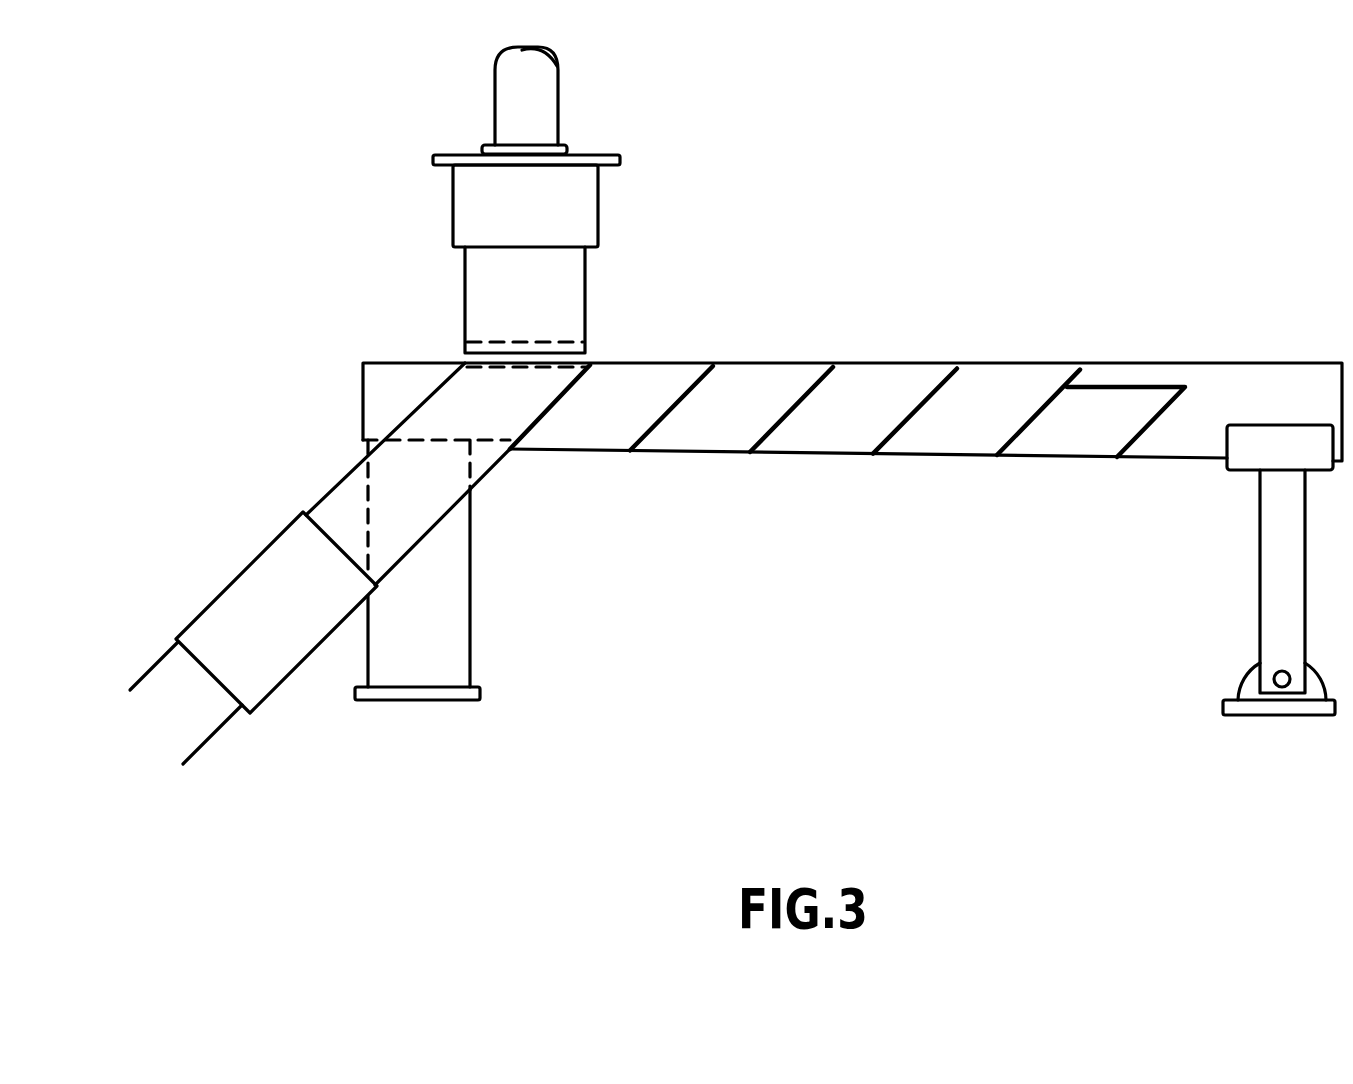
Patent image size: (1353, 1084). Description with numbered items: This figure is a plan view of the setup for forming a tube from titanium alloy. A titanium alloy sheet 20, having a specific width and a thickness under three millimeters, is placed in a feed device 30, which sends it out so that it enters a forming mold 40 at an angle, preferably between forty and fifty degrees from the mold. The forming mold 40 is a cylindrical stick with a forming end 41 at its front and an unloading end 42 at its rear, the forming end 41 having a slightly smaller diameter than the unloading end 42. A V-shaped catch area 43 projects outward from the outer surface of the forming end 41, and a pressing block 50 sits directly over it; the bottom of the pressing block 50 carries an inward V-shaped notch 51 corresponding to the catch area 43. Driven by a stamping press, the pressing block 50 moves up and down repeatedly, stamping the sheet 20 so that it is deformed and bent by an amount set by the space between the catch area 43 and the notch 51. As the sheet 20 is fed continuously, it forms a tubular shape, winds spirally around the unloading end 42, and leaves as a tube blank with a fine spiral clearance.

The 6-4Ti alloy sheet 20 is at (338, 498).
The feed device 30 is at (235, 577).
The forming mold 40 is at (1241, 333).
The forming end 41 is at (362, 384).
The unloading end 42 is at (1144, 367).
The catch area 43 is at (460, 362).
The pressing block 50 is at (452, 217).
The inward notch 51 is at (560, 342).